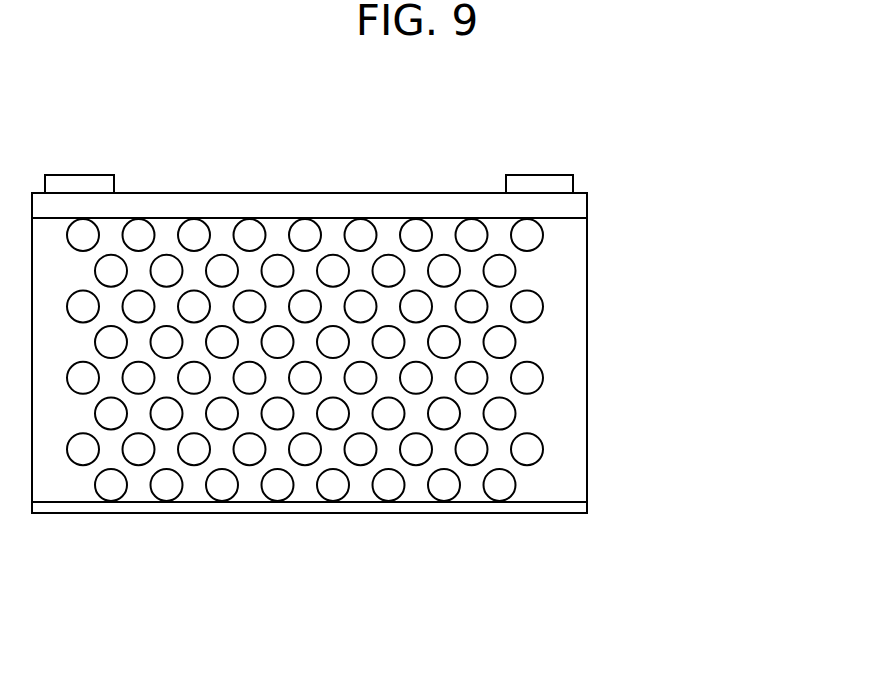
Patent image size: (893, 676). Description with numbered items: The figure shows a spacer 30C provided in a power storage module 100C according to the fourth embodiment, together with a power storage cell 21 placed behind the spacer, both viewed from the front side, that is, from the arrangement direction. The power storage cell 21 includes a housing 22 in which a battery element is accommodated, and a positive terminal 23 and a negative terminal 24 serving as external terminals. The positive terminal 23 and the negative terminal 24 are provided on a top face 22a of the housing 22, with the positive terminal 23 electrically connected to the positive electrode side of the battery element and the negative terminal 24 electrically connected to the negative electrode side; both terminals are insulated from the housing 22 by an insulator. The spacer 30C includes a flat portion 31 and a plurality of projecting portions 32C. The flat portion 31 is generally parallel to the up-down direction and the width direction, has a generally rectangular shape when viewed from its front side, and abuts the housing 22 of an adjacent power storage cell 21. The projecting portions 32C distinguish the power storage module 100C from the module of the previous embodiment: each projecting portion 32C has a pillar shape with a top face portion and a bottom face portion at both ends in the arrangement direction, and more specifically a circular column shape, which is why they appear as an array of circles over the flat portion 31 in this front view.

The power storage module 100C is at (373, 295).
The power storage cell 21 is at (168, 170).
The housing 22 is at (342, 176).
The top face 22a is at (458, 192).
The positive terminal 23 is at (536, 175).
The negative terminal 24 is at (78, 175).
The spacer 30C is at (373, 324).
The flat portion 31 is at (359, 318).
The projecting portions 32C is at (249, 232).